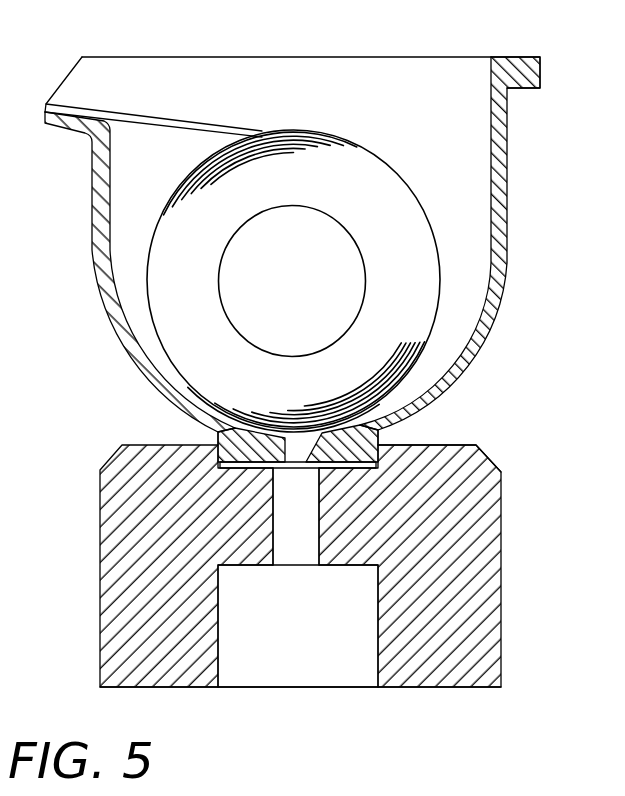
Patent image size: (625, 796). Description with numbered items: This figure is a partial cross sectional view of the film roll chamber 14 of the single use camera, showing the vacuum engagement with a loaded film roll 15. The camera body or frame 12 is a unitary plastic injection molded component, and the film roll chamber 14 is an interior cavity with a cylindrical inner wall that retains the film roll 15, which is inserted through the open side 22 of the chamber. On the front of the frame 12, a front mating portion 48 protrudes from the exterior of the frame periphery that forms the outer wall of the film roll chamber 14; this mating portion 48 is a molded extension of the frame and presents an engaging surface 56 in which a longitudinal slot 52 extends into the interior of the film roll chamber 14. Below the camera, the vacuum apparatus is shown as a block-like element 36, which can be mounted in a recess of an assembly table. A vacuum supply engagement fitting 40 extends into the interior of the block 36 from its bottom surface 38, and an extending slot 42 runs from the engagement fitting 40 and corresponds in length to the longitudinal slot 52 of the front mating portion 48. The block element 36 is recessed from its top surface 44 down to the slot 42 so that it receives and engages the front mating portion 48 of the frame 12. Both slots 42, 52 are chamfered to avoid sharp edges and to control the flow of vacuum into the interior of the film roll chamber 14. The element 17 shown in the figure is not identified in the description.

The frame 12 is at (307, 244).
The film roll chamber 14 is at (463, 188).
The film roll 15 is at (418, 283).
The cover plate 17 is at (180, 125).
The open side 22 is at (462, 80).
The block-like element 36 is at (130, 497).
The bottom surface 38 is at (440, 688).
The vacuum supply engagement fitting 40 is at (234, 672).
The extending slot 42 is at (300, 520).
The top surface 44 is at (440, 445).
The front mating portion 48 is at (225, 430).
The longitudinal slot 52 is at (270, 452).
The engaging surface 56 is at (380, 473).